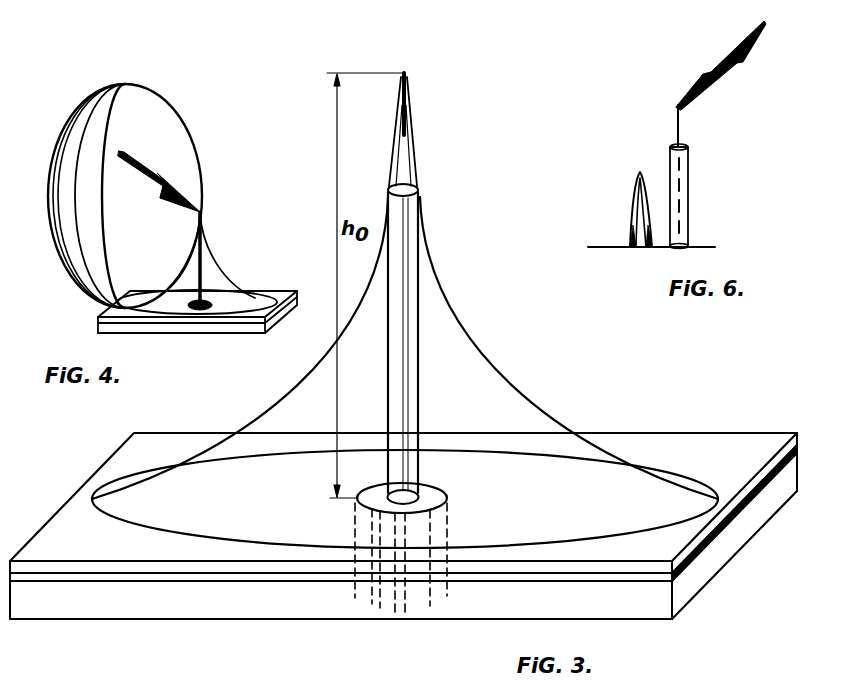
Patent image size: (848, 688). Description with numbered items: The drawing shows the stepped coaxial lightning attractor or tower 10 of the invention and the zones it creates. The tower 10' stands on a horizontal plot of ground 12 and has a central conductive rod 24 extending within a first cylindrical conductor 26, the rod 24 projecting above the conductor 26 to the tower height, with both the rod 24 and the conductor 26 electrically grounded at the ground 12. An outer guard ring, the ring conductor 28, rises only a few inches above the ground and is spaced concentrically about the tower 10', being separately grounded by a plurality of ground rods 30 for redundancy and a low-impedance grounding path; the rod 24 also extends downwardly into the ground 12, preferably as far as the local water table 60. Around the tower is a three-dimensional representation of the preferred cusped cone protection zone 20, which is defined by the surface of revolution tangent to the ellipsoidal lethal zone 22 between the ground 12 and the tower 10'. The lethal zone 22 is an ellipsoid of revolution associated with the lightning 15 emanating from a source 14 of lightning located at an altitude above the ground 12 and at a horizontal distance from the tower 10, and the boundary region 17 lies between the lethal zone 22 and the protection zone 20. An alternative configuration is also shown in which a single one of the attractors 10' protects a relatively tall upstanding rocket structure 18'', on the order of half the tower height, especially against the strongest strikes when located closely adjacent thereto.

In FIG. 3, the lightning attractor or tower 10 is at (376, 77).
In FIG. 4, the lightning attractor or tower 10 is at (216, 245).
In FIG. 3, the ground 12 is at (720, 467).
In FIG. 4, the ground 12 is at (263, 294).
In FIG. 4, the source of lightning 14 is at (120, 156).
In FIG. 4, the lightning 15 is at (163, 202).
In FIG. 3, the boundary region 17 is at (320, 364).
In FIG. 4, the boundary region 17 is at (222, 267).
In FIG. 3, the protection zone 20 is at (435, 387).
In FIG. 4, the lethal zone 22 is at (191, 132).
In FIG. 3, the central conductive rod 24 is at (400, 152).
In FIG. 3, the first cylindrical conductor 26 is at (387, 390).
In FIG. 3, the ring conductor 28 is at (447, 493).
In FIG. 3, the ground rod 30 is at (450, 557).
In FIG. 3, the local water table 60 is at (678, 591).
In FIG. 6, the tower 10' is at (694, 135).
In FIG. 6, the rocket structure 18'' is at (605, 209).